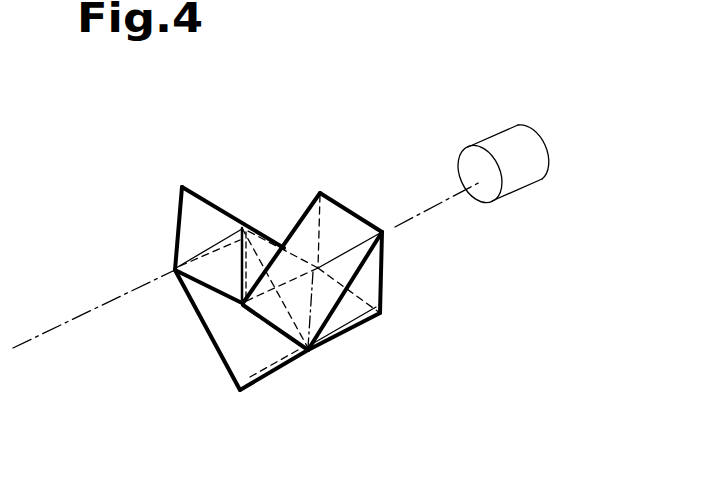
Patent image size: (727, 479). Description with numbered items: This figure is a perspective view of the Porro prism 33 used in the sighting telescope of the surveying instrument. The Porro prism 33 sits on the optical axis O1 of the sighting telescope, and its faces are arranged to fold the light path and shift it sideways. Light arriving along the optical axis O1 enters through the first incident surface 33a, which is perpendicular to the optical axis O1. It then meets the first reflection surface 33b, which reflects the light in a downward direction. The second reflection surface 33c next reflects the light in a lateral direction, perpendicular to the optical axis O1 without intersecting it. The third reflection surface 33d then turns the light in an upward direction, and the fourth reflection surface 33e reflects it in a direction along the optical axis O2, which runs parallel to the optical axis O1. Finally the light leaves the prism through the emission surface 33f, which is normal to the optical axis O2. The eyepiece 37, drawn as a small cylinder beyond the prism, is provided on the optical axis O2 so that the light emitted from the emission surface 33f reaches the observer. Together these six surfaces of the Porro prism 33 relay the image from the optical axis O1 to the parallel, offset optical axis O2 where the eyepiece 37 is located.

The Porro prism 33 is at (278, 270).
The first incident surface 33a is at (195, 215).
The first reflection surface 33b is at (255, 232).
The second reflection surface 33c is at (205, 335).
The third reflection surface 33d is at (285, 365).
The fourth reflection surface 33e is at (342, 238).
The emission surface 33f is at (383, 273).
The eyepiece 37 is at (533, 153).
The optical axis O1 is at (37, 327).
The optical axis O2 is at (467, 228).